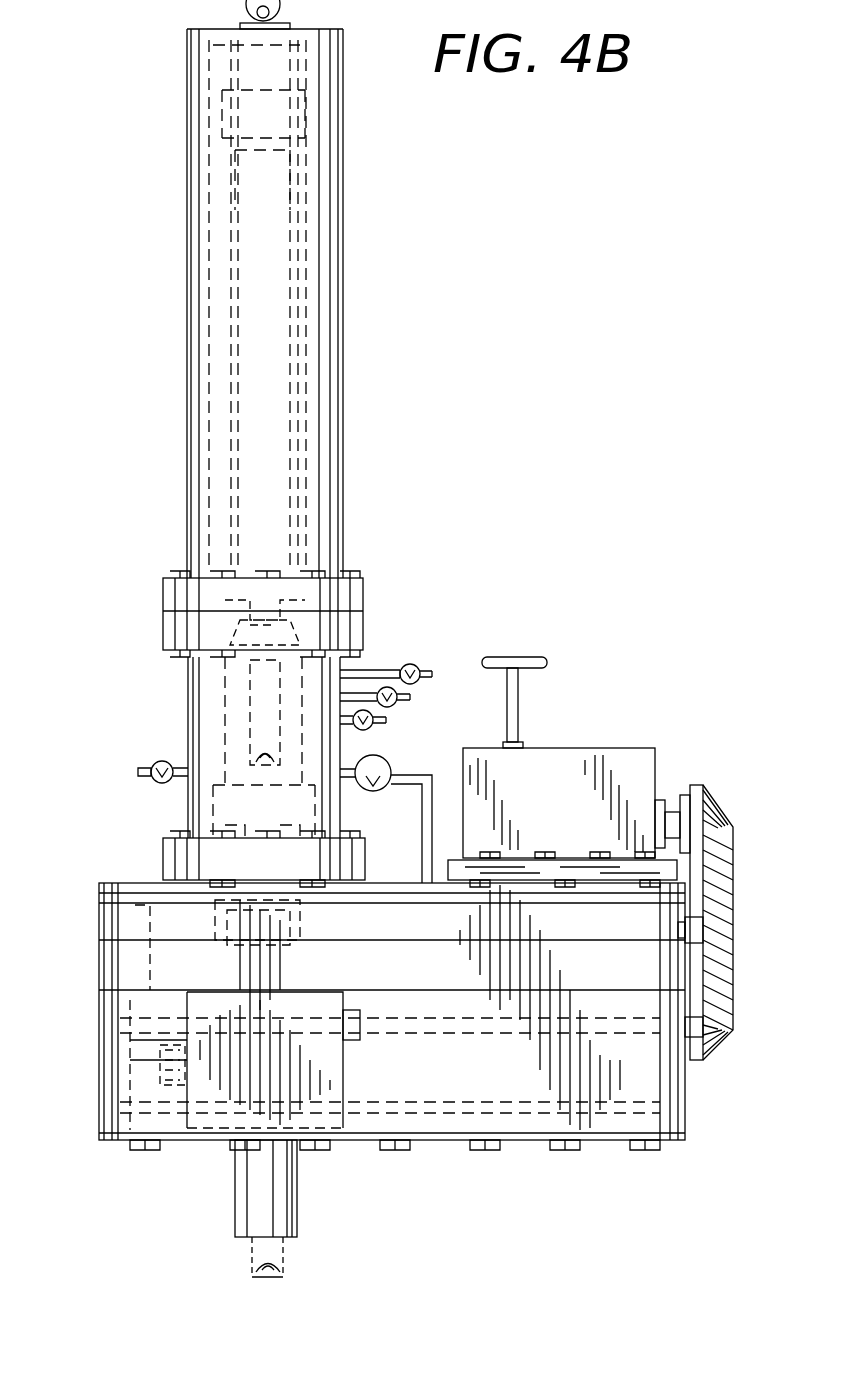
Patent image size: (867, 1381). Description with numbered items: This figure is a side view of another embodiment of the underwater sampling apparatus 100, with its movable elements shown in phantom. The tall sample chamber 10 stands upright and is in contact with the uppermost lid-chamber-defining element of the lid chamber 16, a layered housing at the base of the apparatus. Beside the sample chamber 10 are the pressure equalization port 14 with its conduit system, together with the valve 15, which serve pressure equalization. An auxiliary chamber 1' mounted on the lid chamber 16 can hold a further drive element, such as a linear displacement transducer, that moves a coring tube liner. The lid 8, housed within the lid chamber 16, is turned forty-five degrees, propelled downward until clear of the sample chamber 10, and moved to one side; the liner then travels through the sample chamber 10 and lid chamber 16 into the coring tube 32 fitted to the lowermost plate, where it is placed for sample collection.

The underwater sampling apparatus 100 is at (183, 120).
The sample chamber 10 is at (168, 677).
The valve 15 is at (386, 762).
The pressure equalization port 14 is at (425, 770).
The auxiliary chamber 1' is at (569, 772).
The lid chamber 16 is at (690, 1128).
The lid 8 is at (225, 968).
The coring tube 32 is at (235, 1212).